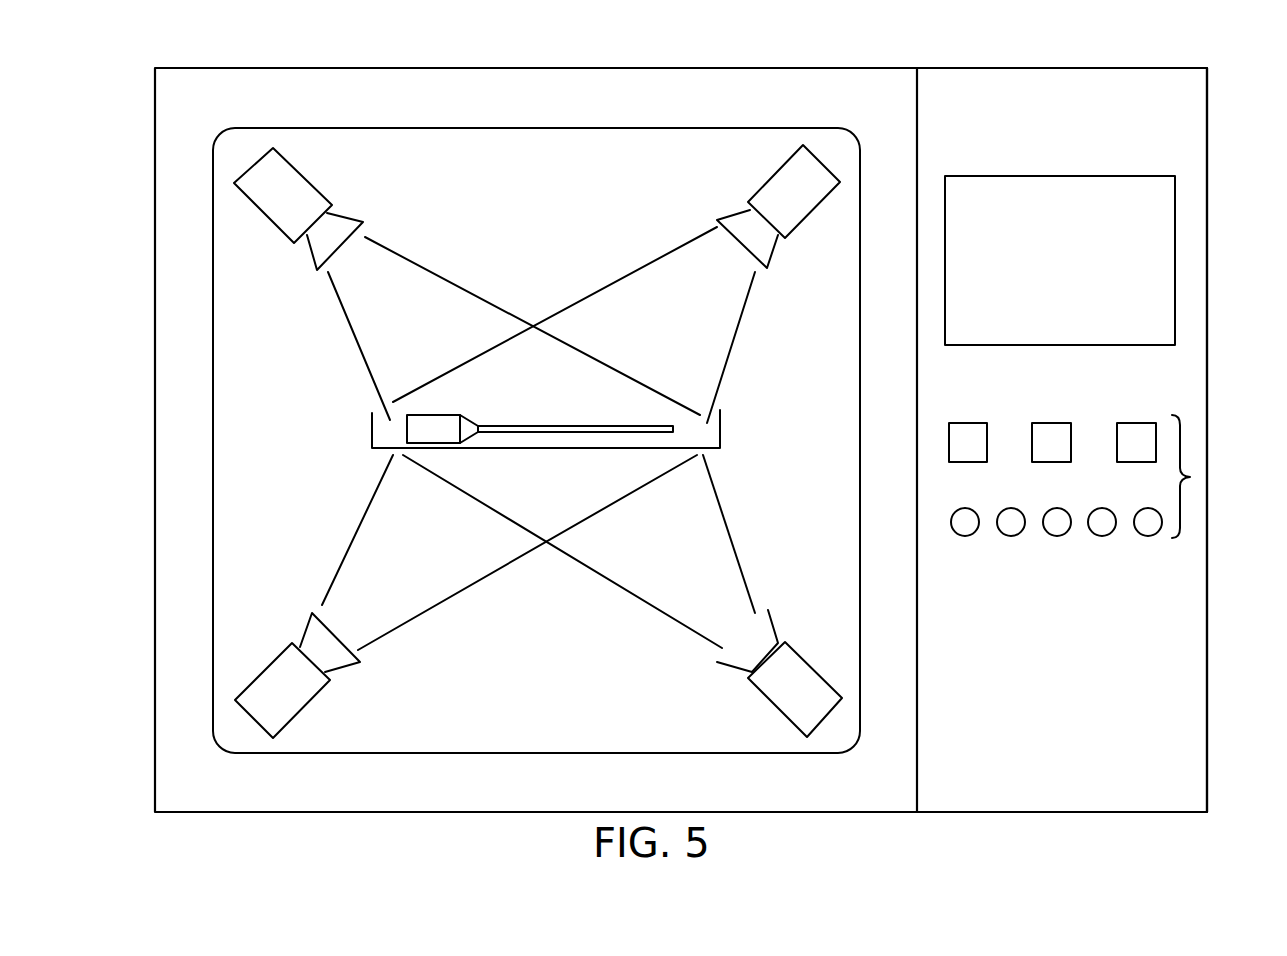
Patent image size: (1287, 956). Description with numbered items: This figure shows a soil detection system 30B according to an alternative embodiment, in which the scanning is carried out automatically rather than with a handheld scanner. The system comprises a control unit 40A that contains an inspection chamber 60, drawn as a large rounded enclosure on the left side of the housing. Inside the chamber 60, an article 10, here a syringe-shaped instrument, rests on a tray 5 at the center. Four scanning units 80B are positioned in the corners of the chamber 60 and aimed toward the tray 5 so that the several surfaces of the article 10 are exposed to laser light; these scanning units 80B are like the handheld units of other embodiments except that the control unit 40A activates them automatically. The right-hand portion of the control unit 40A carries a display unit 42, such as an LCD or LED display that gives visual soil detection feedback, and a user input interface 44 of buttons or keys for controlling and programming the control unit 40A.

The soil detection system 30B is at (294, 58).
The inspection chamber 60 is at (478, 128).
The scanning units 80B is at (305, 188).
The tray 5 is at (722, 437).
The article 10 is at (503, 428).
The control unit 40A is at (1215, 138).
The display unit 42 is at (1176, 258).
The user input interface 44 is at (1190, 477).